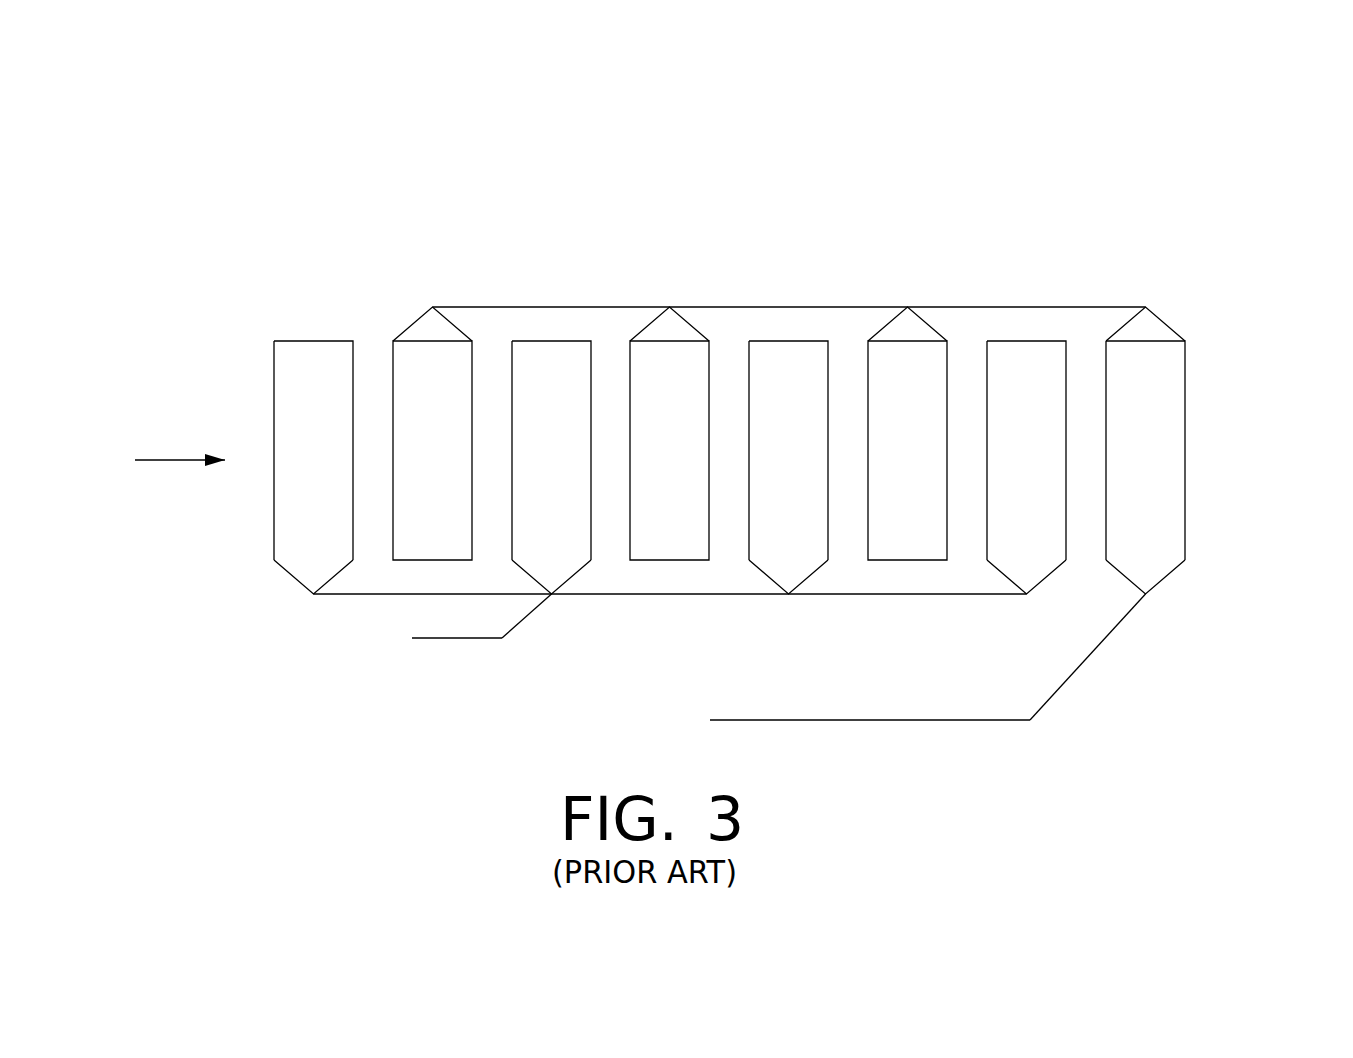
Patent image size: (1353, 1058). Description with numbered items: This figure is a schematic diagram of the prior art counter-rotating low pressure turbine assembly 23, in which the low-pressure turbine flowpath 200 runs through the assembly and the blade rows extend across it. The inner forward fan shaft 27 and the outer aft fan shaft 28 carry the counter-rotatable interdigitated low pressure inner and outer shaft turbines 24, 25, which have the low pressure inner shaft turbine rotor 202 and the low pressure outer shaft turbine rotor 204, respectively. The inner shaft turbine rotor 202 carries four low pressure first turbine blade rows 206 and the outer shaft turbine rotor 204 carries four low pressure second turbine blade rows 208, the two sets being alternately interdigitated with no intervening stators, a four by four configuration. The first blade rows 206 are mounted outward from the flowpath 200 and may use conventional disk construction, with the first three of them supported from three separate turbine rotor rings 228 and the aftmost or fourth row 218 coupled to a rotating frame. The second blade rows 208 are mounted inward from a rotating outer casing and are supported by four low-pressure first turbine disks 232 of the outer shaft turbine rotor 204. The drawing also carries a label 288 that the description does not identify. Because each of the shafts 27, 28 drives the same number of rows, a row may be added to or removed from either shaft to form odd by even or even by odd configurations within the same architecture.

The counter-rotating low pressure turbine assembly 23 is at (572, 132).
The low pressure inner shaft turbine 24 is at (975, 253).
The low pressure outer shaft turbine 25 is at (538, 278).
The inner forward fan shaft 27 is at (870, 723).
The outer aft fan shaft 28 is at (436, 640).
The low-pressure turbine flowpath 200 is at (167, 460).
The low pressure inner shaft turbine rotor 202 is at (533, 610).
The low pressure outer shaft turbine rotor 204 is at (1090, 660).
The low pressure first turbine blade rows 206 is at (849, 467).
The low pressure second turbine blade rows 208 is at (287, 521).
The aftmost or fourth row 218 is at (1167, 427).
The turbine rotor rings 228 is at (693, 337).
The low-pressure first turbine disks 232 is at (300, 572).
The tapered top portion 288 is at (420, 327).